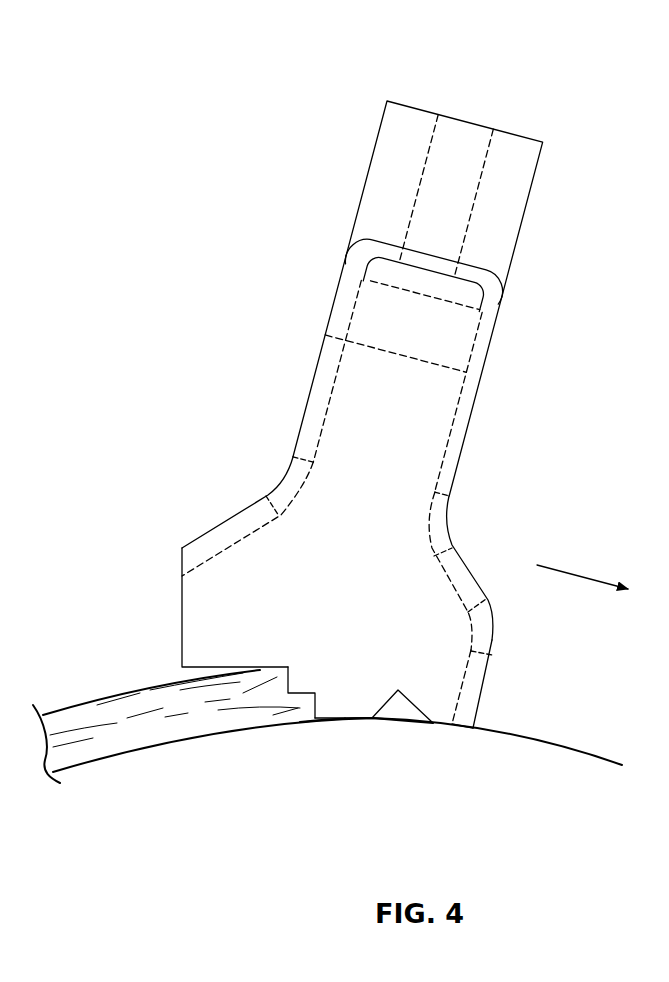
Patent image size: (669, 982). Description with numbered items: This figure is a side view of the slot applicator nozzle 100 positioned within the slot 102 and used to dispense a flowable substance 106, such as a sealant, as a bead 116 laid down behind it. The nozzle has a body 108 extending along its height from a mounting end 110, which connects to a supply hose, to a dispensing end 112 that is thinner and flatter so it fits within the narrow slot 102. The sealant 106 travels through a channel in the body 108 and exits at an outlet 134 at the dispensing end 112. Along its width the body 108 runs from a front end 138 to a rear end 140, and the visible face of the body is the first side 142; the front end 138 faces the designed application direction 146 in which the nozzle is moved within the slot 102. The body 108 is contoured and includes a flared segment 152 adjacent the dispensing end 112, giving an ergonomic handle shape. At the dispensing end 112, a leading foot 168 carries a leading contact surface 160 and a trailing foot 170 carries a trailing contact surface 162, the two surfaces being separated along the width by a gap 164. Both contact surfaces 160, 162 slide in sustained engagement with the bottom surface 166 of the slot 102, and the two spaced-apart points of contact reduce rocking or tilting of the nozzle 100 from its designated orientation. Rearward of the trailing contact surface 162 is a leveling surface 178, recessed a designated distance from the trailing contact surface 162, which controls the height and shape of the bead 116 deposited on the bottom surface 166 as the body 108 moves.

The slot applicator nozzle 100 is at (268, 171).
The slot 102 is at (535, 712).
The flowable substance 106 is at (117, 718).
The body 108 is at (328, 337).
The mounting end 110 is at (410, 99).
The dispensing end 112 is at (368, 746).
The bead 116 is at (145, 690).
The outlet 134 is at (279, 686).
The front end 138 is at (499, 626).
The rear end 140 is at (177, 548).
The first side 142 is at (390, 427).
The application direction 146 is at (582, 553).
The flared segment 152 is at (255, 522).
The leading contact surface 160 is at (450, 728).
The trailing contact surface 162 is at (342, 722).
The gap 164 is at (401, 710).
The bottom surface 166 is at (557, 747).
The leading foot 168 is at (457, 712).
The trailing foot 170 is at (343, 698).
The leveling surface 178 is at (207, 672).